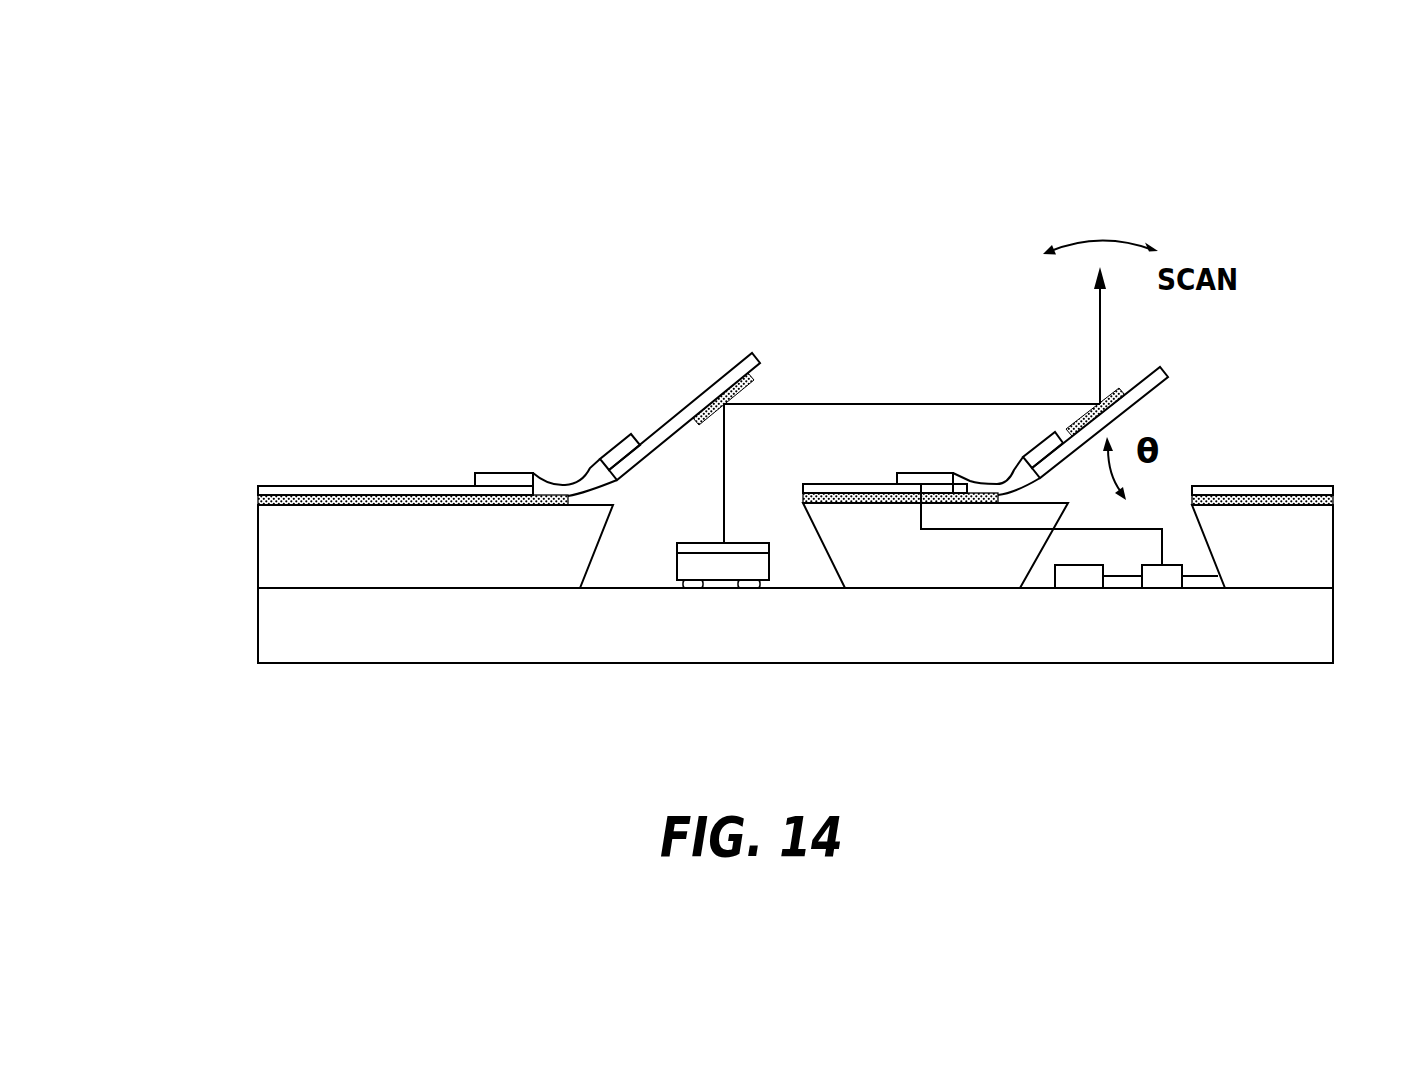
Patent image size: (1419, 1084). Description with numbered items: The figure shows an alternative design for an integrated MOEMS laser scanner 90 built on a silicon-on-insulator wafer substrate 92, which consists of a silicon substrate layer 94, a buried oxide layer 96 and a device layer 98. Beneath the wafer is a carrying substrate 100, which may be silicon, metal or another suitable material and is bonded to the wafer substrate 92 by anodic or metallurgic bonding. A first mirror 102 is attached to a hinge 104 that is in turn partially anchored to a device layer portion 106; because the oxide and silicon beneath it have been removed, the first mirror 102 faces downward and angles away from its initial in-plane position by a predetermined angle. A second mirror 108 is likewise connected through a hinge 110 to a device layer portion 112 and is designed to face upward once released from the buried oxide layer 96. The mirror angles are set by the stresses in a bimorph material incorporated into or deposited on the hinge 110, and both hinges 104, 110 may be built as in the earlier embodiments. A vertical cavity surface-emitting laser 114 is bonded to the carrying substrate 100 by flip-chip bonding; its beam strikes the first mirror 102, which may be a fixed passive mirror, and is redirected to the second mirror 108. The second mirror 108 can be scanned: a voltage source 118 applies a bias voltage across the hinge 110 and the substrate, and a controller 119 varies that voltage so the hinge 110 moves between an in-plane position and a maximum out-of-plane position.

The integrated MOEMS laser scanner 90 is at (236, 318).
The silicon-on-insulator wafer substrate 92 is at (453, 462).
The silicon substrate layer 94 is at (263, 558).
The buried oxide layer 96 is at (258, 500).
The device layer 98 is at (258, 488).
The carrying substrate 100 is at (1317, 612).
The first mirror 102 is at (747, 383).
The hinge 104 is at (550, 482).
The device layer portion 106 is at (353, 486).
The second mirror 108 is at (1122, 390).
The hinge 110 is at (1003, 478).
The device layer portion 112 is at (833, 486).
The vertical cavity surface-emitting laser 114 is at (720, 569).
The voltage source 118 is at (1160, 580).
The controller 119 is at (1082, 580).